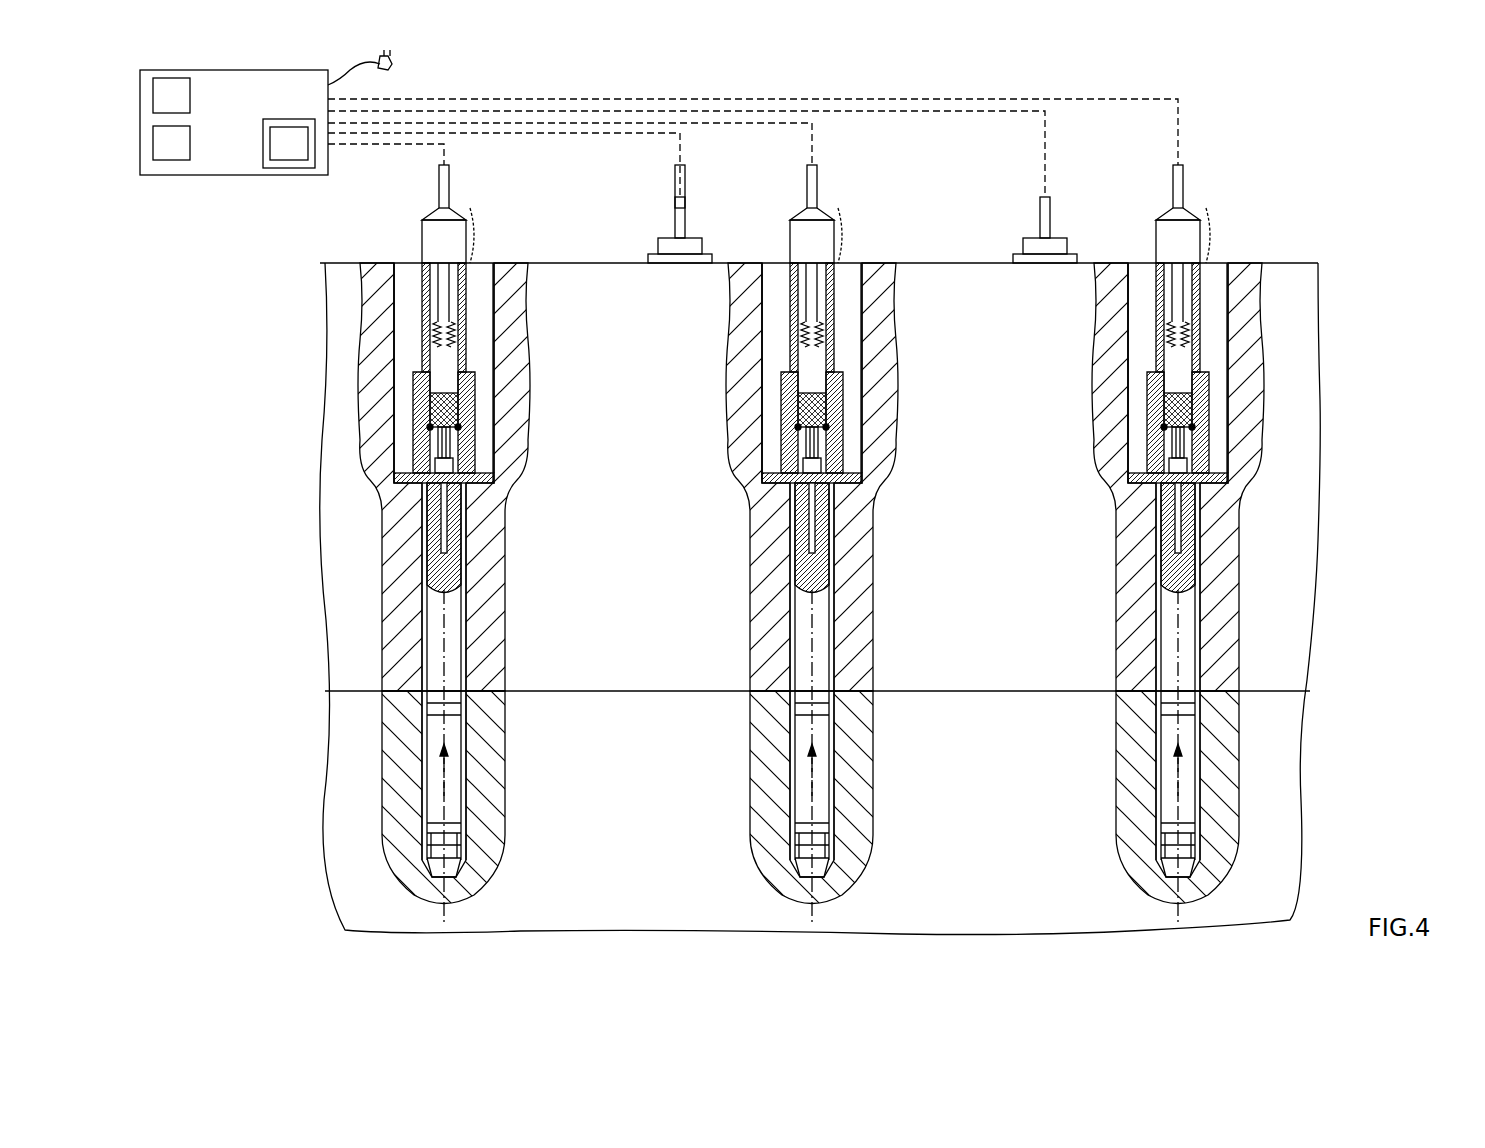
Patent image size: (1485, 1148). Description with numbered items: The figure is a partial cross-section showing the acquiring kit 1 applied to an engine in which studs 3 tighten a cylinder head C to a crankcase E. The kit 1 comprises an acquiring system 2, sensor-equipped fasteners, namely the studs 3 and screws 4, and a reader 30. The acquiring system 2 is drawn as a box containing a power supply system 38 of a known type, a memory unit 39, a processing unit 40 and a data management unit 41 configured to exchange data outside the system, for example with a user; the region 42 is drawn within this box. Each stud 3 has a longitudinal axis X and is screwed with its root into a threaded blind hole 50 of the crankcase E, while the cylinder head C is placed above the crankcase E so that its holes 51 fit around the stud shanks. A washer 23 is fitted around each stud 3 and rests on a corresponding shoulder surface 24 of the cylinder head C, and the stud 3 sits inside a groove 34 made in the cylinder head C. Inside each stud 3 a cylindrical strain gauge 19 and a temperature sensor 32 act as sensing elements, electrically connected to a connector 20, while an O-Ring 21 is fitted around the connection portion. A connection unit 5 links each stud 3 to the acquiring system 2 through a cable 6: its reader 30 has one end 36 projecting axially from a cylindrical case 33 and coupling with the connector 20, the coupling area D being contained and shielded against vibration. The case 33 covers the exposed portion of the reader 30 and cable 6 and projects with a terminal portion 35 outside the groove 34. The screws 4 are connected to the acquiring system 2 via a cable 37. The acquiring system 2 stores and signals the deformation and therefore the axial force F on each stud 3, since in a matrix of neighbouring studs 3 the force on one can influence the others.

The acquiring kit 1 is at (1326, 180).
The acquiring system 2 is at (130, 138).
The stud 3 is at (478, 622).
The screw 4 is at (648, 232).
The connection unit 5 is at (418, 240).
The cable 6 is at (448, 196).
The strain gauge 19 is at (445, 560).
The connector 20 is at (440, 408).
The O-Ring 21 is at (430, 427).
The washer 23 is at (396, 478).
The shoulder surface 24 is at (478, 470).
The reader 30 is at (450, 357).
The temperature sensor 32 is at (450, 473).
The case 33 is at (430, 232).
The groove 34 is at (398, 325).
The terminal portion 35 is at (858, 235).
The end of the socket 36 is at (458, 208).
The cable 37 is at (678, 215).
The power supply system 38 is at (388, 68).
The memory unit 39 is at (190, 98).
The processing unit 40 is at (190, 138).
The data management unit 41 is at (285, 119).
The sub-module 42 is at (290, 156).
The blind hole 50 is at (430, 795).
The hole 51 is at (462, 673).
The cylinder head C is at (1310, 373).
The coupling area D is at (470, 425).
The crankcase E is at (1300, 843).
The axial force F is at (448, 773).
The longitudinal axis X is at (448, 914).